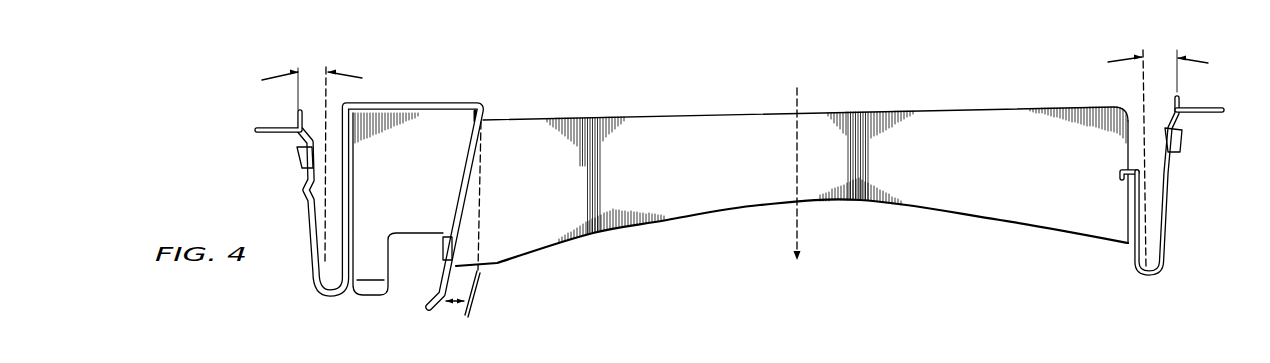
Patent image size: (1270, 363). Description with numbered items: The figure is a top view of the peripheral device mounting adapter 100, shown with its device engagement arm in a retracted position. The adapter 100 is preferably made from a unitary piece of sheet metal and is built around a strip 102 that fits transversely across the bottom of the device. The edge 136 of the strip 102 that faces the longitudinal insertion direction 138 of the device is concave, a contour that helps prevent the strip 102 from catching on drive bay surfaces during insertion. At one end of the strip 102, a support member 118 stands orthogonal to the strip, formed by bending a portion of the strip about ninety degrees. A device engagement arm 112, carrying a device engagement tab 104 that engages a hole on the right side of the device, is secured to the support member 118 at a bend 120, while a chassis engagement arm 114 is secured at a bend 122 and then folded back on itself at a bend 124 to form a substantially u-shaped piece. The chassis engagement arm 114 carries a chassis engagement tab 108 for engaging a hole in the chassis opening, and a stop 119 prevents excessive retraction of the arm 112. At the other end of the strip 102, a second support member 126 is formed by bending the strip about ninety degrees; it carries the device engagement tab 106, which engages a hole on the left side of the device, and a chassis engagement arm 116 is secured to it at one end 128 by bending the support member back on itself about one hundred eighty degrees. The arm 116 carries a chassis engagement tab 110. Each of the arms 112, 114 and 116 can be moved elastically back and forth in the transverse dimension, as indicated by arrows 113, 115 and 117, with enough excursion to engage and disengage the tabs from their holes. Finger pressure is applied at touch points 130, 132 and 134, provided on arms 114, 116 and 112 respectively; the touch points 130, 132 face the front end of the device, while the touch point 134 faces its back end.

The peripheral device mounting adapter 100 is at (745, 204).
The strip 102 is at (682, 125).
The device engagement tab 104 is at (478, 177).
The device engagement tab 106 is at (1122, 173).
The chassis engagement tab 108 is at (298, 158).
The chassis engagement tab 110 is at (1182, 143).
The device engagement arm 112 is at (461, 198).
The arrow 113 is at (464, 314).
The chassis engagement arm 114 is at (309, 216).
The arrow 115 is at (310, 80).
The chassis engagement arm 116 is at (1167, 203).
The arrow 117 is at (1158, 60).
The support member 118 is at (430, 102).
The stop 119 is at (443, 250).
The bend 120 is at (479, 102).
The bend 122 is at (341, 101).
The bend 124 is at (325, 292).
The support member 126 is at (1130, 221).
The bend 128 is at (1153, 275).
The touch point 130 is at (297, 109).
The touch point 132 is at (1182, 96).
The touch point 134 is at (438, 308).
The edge 136 is at (978, 220).
The longitudinal insertion direction 138 is at (793, 231).